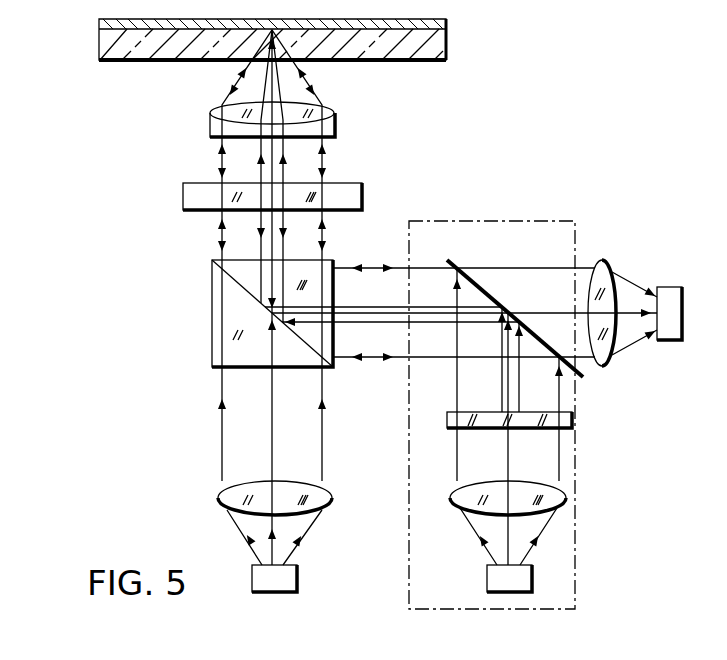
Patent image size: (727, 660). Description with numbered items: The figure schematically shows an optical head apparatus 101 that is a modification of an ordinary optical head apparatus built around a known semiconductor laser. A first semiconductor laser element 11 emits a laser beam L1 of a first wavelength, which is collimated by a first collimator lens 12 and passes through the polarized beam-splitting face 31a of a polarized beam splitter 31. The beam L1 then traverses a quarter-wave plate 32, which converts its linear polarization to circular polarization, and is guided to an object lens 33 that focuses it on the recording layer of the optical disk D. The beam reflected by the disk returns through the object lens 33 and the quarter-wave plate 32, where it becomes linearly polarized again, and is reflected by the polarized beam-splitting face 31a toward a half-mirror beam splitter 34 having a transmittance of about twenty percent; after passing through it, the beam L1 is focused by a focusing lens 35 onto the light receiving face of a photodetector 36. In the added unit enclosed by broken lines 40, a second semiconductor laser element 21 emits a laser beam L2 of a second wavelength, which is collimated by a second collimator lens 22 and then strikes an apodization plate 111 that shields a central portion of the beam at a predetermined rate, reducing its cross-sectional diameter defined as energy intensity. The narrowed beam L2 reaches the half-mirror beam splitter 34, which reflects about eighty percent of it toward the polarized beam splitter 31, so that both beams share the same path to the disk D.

The optical disk D is at (446, 40).
The optical head apparatus 101 is at (510, 134).
The object lens 33 is at (334, 105).
The λ/4 plate 32 is at (362, 199).
The polarized beam splitter 31 is at (303, 341).
The polarized beam-splitting face 31a is at (318, 352).
The laser beam L1 is at (237, 432).
The first collimator lens 12 is at (313, 500).
The first semiconductor laser element 11 is at (278, 593).
The broken lines 40 is at (575, 573).
The half-mirror beam splitter 34 is at (482, 288).
The laser beam L2 is at (510, 445).
The apodization plate 111 is at (572, 420).
The second collimator lens 22 is at (470, 490).
The second semiconductor laser element 21 is at (487, 578).
The focusing lens 35 is at (604, 262).
The photodetector 36 is at (667, 340).